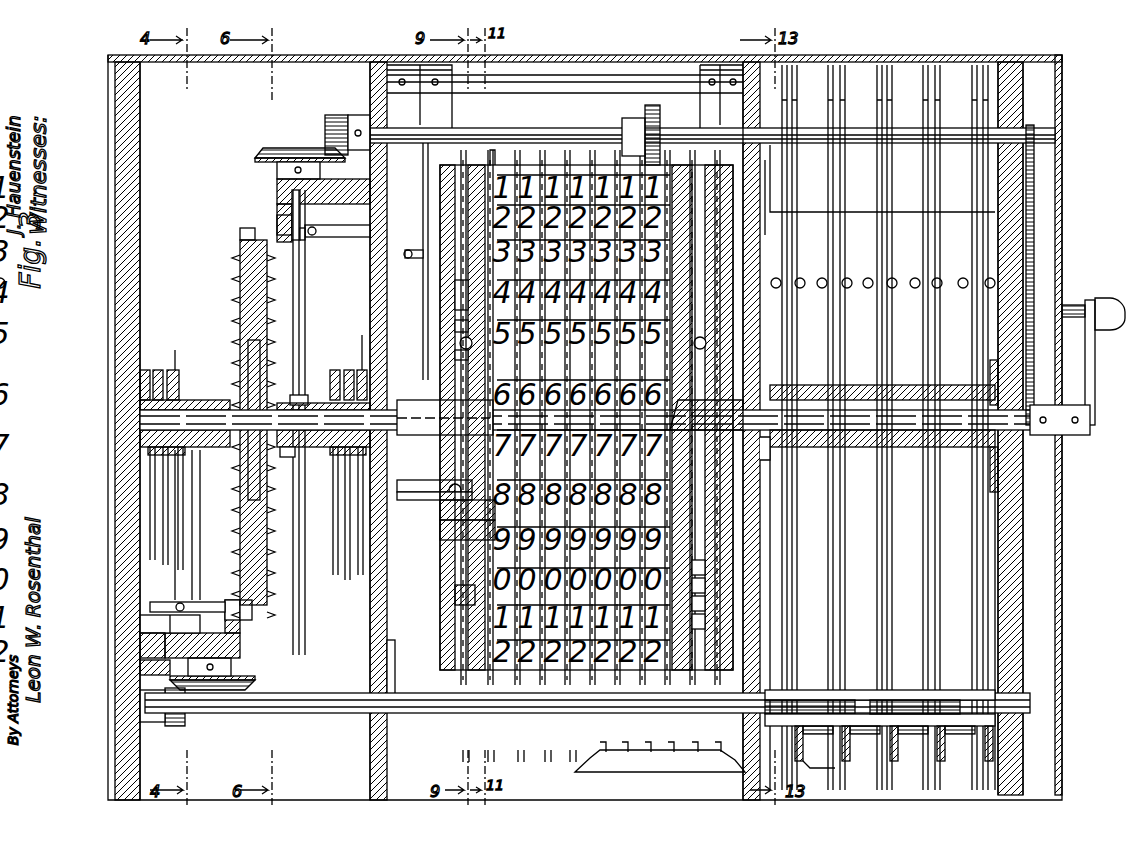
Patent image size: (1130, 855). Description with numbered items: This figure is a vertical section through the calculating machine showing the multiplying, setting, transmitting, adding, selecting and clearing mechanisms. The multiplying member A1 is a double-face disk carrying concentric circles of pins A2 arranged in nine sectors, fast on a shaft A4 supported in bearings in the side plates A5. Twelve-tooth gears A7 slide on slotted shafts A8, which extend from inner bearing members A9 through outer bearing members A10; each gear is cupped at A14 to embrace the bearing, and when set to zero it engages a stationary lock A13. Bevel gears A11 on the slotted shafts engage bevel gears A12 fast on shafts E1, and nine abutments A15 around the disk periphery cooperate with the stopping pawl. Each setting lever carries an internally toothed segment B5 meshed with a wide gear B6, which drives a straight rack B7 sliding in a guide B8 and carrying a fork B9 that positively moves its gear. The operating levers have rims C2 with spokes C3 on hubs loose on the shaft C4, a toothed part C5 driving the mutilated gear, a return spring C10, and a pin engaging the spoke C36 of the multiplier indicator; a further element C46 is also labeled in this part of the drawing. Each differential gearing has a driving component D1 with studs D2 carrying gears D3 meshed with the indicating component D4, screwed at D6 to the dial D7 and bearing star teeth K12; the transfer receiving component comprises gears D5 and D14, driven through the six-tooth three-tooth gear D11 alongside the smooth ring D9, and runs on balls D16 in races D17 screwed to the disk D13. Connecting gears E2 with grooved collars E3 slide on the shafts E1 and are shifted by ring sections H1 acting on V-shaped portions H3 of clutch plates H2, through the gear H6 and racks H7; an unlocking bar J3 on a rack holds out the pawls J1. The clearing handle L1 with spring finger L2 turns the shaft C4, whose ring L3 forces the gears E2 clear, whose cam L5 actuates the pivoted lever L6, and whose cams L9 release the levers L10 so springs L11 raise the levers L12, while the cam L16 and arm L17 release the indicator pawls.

The multiplying member A1 is at (240, 293).
The pins A2 is at (240, 321).
The shaft A4 is at (312, 447).
The plates A5 is at (118, 620).
The twelve-tooth gears A7 is at (278, 222).
The slotted shafts A8 is at (306, 304).
The bearing members A9 is at (210, 400).
The outer bearing members A10 is at (278, 188).
The bevel gears A11 is at (296, 148).
The bevel gears A12 is at (330, 118).
The stationary lock A13 is at (343, 238).
The cupped part of gear A14 is at (306, 238).
The abutments A15 is at (240, 232).
The internally toothed segment B5 is at (335, 520).
The wide gear B6 is at (160, 368).
The straight rack B7 is at (180, 352).
The guide B8 is at (150, 628).
The fork B9 is at (140, 648).
The rim C2 is at (838, 88).
The spokes C3 is at (840, 550).
The shaft C4 is at (410, 436).
The toothed part C5 is at (845, 765).
The spring C10 is at (850, 278).
The spoke C36 is at (830, 194).
The roller C46 is at (820, 278).
The driving component D1 is at (570, 148).
The studs D2 is at (705, 572).
The gears D3 is at (705, 590).
The indicating component D4 is at (705, 608).
The gear D5 is at (455, 528).
The screw connection D6 is at (705, 626).
The dial D7 is at (603, 148).
The smooth ring D9 is at (455, 595).
The gear D11 is at (455, 265).
The disk D13 is at (455, 325).
The gear D14 is at (455, 548).
The balls D16 is at (460, 343).
The ball races D17 is at (455, 358).
The shaft E1 is at (505, 128).
The connecting gear E2 is at (660, 112).
The grooved collar E3 is at (640, 118).
The ring sections H1 is at (875, 740).
The clutch plate H2 is at (917, 740).
The V-shaped raised portion H3 is at (962, 740).
The gear H6 is at (812, 700).
The rack H7 is at (910, 700).
The pawl J1 is at (540, 760).
The unlocking bar J3 is at (658, 770).
The star teeth K12 is at (490, 167).
The clearing handle L1 is at (1105, 298).
The spring finger L2 is at (1070, 305).
The ring L3 is at (1034, 178).
The cam L5 is at (425, 480).
The pivoted lever L6 is at (440, 498).
The cams L9 is at (750, 468).
The levers L10 is at (743, 102).
The springs L11 is at (412, 250).
The levers L12 is at (478, 118).
The cam L16 is at (990, 476).
The arm L17 is at (990, 367).